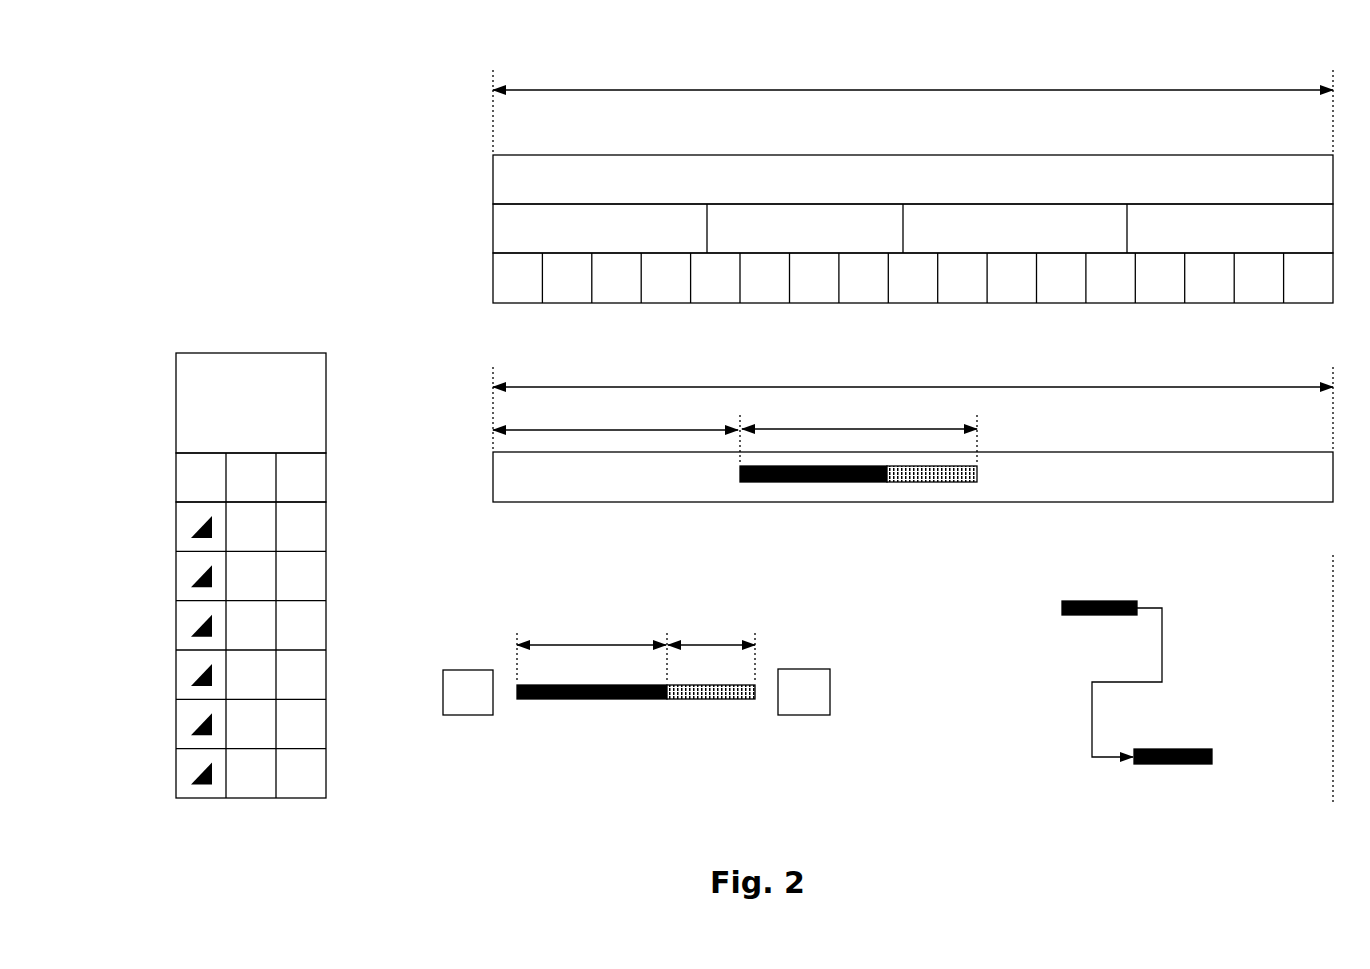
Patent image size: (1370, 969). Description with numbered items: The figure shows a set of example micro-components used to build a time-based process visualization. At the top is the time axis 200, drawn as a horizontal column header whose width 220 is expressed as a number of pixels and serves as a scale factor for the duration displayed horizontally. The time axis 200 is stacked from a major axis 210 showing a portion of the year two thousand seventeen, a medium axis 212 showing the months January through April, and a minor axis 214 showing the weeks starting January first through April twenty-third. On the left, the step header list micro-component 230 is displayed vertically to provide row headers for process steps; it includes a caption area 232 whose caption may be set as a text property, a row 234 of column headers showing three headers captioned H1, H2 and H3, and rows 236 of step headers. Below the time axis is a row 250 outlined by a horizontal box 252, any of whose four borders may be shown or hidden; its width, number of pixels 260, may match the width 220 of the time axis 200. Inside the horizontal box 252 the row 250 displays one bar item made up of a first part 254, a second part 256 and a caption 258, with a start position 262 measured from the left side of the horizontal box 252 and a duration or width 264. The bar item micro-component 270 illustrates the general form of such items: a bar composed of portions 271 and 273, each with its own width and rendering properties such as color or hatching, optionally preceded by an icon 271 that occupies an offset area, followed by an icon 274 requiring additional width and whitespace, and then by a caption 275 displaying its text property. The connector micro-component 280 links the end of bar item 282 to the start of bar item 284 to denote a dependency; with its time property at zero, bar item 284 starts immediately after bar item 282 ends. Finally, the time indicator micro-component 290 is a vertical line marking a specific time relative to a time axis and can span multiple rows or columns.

The time axis 200 is at (425, 88).
The major axis 210 is at (487, 185).
The medium axis 212 is at (487, 235).
The minor axis 214 is at (487, 285).
The width 220 is at (913, 106).
The step header list micro-component 230 is at (288, 320).
The caption area 232 is at (251, 403).
The row of column headers 234 is at (313, 463).
The rows of step headers 236 is at (313, 523).
The row 250 is at (465, 378).
The horizontal box 252 is at (517, 492).
The first part 254 is at (765, 483).
The second part 256 is at (908, 483).
The caption 258 is at (1043, 487).
The number of pixels 260 is at (913, 402).
The start position 262 is at (615, 416).
The duration or width 264 is at (858, 430).
The bar item micro-component 270 is at (465, 603).
The bar portion / icon 271 is at (470, 717).
The bar portion 273 is at (688, 700).
The icon 274 is at (805, 718).
The caption 275 is at (890, 707).
The connector micro-component 280 is at (1125, 684).
The bar item 282 is at (1097, 630).
The bar item 284 is at (1176, 775).
The time indicator micro-component 290 is at (1330, 662).